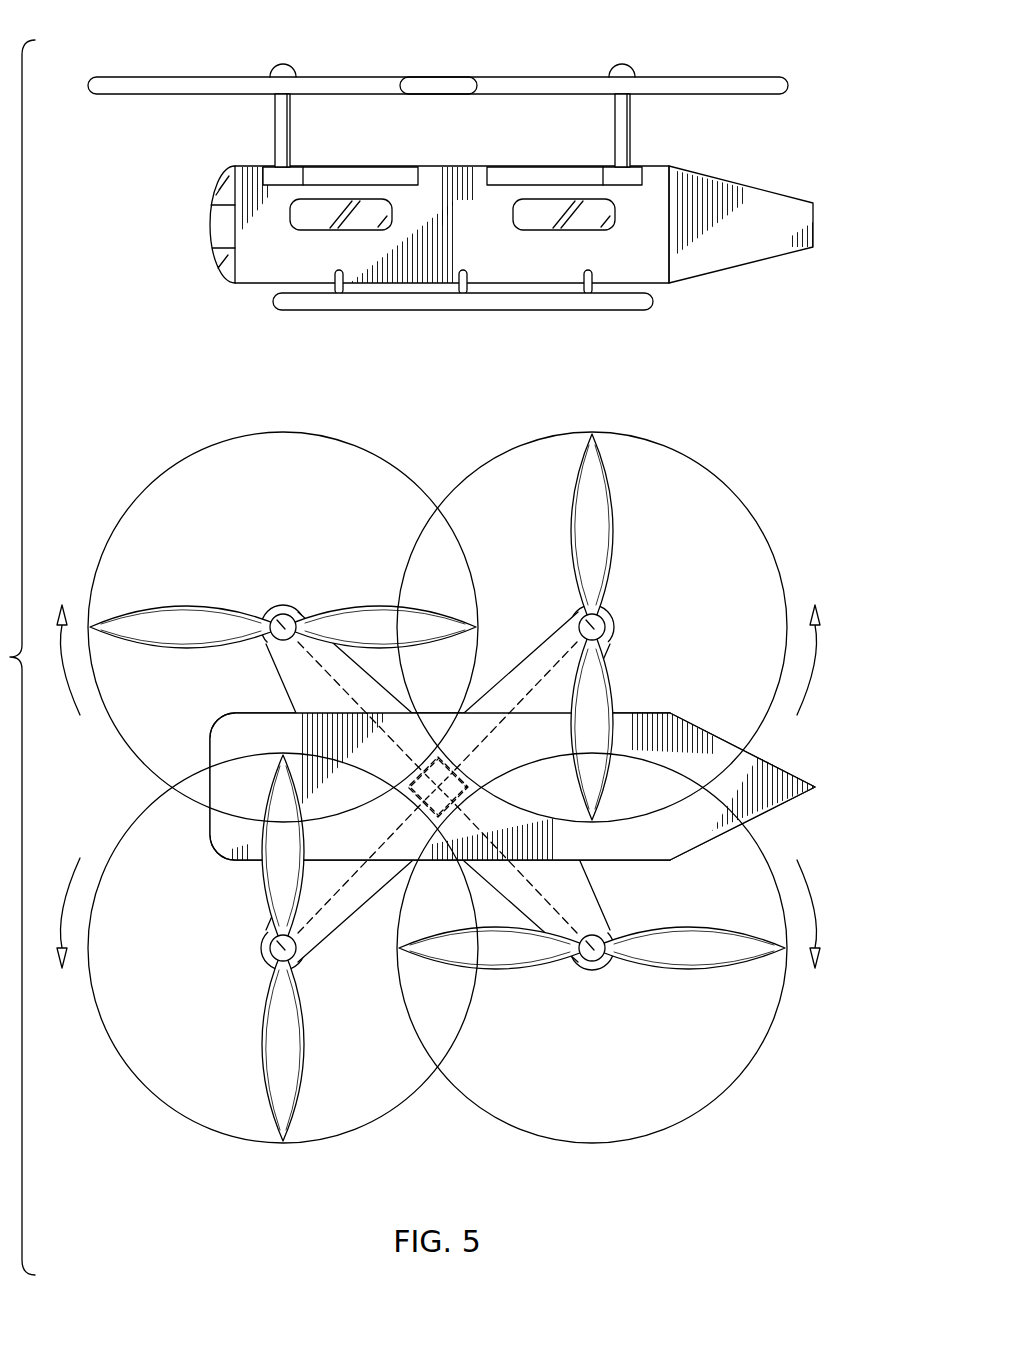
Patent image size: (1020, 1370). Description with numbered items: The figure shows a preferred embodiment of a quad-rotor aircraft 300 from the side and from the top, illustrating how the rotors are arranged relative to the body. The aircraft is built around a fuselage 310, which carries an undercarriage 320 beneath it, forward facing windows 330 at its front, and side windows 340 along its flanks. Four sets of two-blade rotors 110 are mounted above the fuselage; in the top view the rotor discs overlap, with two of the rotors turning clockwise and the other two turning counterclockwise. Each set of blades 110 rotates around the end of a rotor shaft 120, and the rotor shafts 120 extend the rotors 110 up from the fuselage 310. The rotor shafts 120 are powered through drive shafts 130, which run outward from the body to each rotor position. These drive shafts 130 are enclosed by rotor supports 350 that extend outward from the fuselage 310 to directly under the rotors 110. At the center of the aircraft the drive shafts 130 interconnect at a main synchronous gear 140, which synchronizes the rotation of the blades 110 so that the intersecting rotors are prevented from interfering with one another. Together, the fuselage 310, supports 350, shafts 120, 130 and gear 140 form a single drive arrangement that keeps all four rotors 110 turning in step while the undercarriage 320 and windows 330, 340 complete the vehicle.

The rotor blades 110 is at (140, 77).
The rotor shafts 120 is at (275, 127).
The drive shafts 130 is at (277, 672).
The main synchronous gear 140 is at (483, 770).
The quad-rotor aircraft 300 is at (800, 113).
The fuselage 310 is at (778, 245).
The undercarriage 320 is at (636, 310).
The forward facing windows 330 is at (212, 195).
The side windows 340 is at (305, 228).
The rotor supports 350 is at (360, 172).